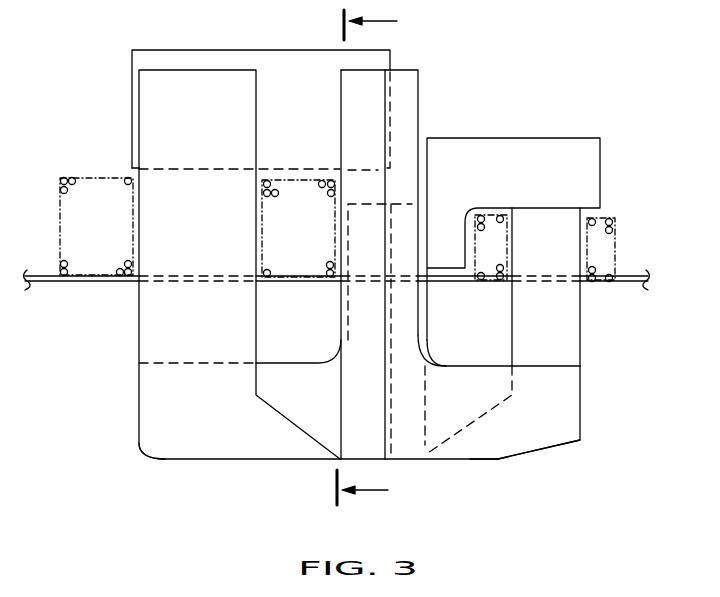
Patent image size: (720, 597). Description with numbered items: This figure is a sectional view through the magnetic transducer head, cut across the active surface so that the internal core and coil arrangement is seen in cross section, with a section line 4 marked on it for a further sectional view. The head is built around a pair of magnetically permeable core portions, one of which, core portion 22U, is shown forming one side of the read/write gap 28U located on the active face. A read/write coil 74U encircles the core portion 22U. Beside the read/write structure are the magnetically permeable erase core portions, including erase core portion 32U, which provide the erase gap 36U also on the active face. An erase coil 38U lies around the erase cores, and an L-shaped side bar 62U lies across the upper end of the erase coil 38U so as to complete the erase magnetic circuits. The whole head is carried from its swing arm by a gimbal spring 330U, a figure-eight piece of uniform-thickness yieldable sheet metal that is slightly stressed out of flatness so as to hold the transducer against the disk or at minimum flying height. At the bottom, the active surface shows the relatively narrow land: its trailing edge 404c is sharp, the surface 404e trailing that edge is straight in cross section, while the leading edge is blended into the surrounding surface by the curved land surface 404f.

The section line 4- 4 is at (355, 257).
The magnetically permeable core portion 22U is at (139, 414).
The read/write gap 28U is at (340, 460).
The erase core portion 32U is at (580, 402).
The erase gap 36U is at (418, 459).
The erase coil 38U is at (616, 226).
The L-shaped side bar 62U is at (524, 138).
The read/write coil 74U is at (73, 178).
The gimbal spring 330U is at (630, 290).
The trailing end or edge of the narrow land 404c is at (498, 462).
The surface trailing the edge 404e is at (565, 450).
The curved land surface 404f is at (147, 453).